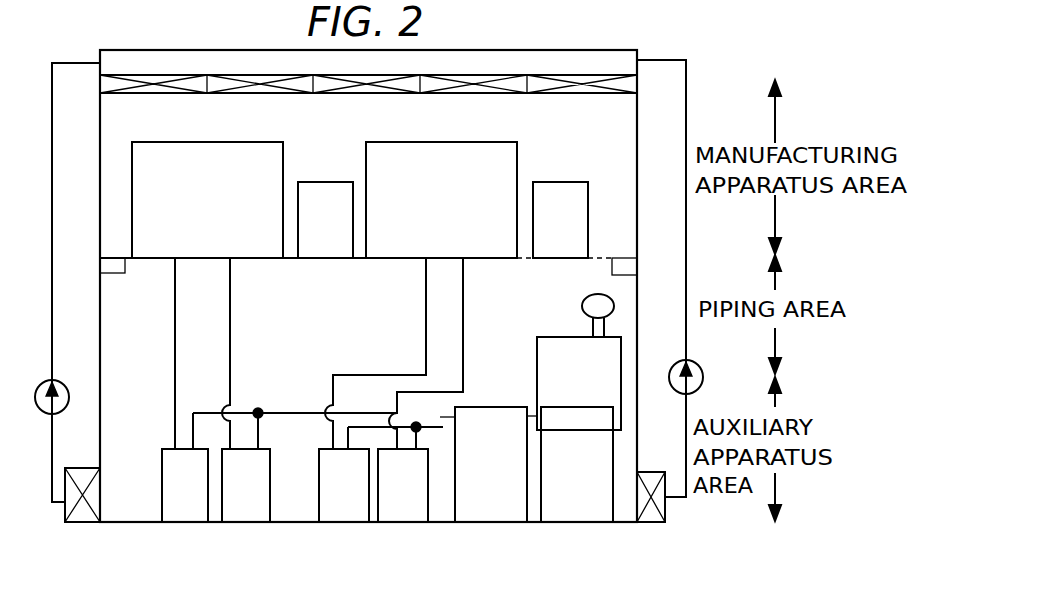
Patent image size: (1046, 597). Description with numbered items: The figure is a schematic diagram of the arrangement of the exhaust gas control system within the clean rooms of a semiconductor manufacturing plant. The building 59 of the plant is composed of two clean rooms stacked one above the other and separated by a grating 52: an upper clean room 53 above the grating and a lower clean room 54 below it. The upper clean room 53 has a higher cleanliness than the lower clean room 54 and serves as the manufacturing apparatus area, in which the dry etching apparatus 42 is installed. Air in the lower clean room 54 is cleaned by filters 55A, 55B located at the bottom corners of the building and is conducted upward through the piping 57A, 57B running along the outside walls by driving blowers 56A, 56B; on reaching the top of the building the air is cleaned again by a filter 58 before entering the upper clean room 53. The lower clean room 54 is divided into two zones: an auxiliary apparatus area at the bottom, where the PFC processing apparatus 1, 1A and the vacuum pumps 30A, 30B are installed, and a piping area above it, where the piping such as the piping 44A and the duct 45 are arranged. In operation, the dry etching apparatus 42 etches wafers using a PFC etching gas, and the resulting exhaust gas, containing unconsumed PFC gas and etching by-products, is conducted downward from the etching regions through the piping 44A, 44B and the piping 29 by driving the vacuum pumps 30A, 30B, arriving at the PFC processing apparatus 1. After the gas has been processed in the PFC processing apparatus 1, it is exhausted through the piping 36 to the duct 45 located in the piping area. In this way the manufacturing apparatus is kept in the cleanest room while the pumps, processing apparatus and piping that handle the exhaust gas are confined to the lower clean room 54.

The PFC processing apparatus 1 is at (577, 464).
The PFC processing apparatus 1A is at (491, 464).
The piping 29 is at (283, 412).
The vacuum pump 30A is at (243, 510).
The vacuum pump 30B is at (162, 463).
The piping 36 is at (618, 360).
The dry etching apparatus 42 is at (210, 141).
The piping 44A is at (232, 330).
The piping 44B is at (173, 336).
The duct 45 is at (600, 300).
The grating 52 is at (362, 259).
The clean room 53 is at (576, 131).
The clean room 54 is at (347, 303).
The filter 55A is at (66, 513).
The filter 55B is at (666, 500).
The blower 56A is at (52, 388).
The blower 56B is at (701, 379).
The piping 57A is at (52, 225).
The piping 57B is at (684, 200).
The filter 58 is at (604, 78).
The building 59 is at (100, 107).